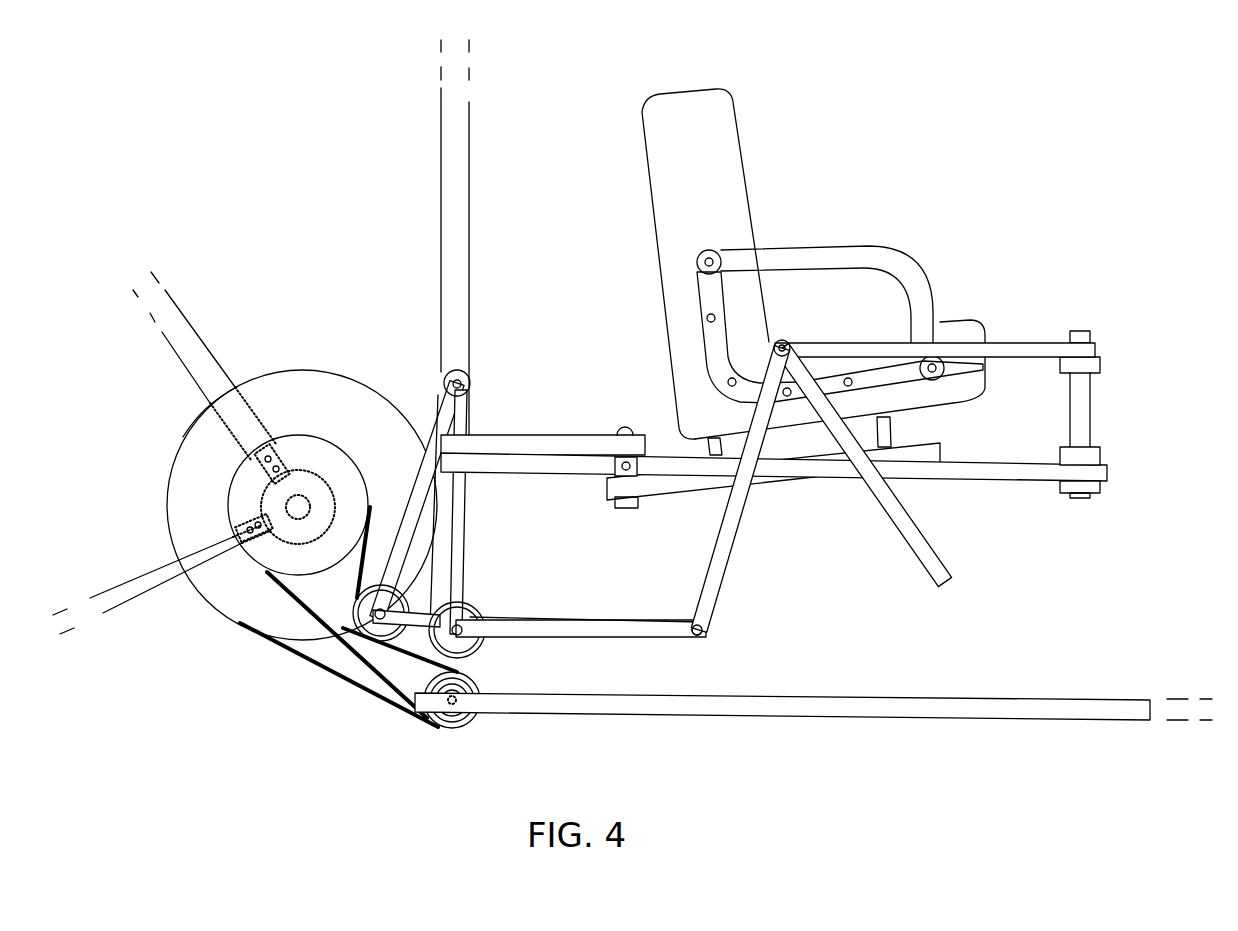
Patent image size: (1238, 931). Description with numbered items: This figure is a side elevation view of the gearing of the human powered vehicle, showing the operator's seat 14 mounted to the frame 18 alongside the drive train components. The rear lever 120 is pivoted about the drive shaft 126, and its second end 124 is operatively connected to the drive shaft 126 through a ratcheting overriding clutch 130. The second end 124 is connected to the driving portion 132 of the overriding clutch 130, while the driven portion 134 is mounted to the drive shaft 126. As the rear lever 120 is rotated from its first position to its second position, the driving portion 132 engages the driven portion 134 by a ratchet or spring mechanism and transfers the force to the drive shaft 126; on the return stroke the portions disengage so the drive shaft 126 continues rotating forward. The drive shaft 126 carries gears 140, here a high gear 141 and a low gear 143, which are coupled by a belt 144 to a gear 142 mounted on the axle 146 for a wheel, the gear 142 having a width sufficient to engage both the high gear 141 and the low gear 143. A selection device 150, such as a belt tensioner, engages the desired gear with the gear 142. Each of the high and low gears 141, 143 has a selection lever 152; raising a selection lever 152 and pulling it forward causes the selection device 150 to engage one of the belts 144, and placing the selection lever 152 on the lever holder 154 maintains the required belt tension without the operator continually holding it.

The seat 14 is at (700, 92).
The frame 18 is at (702, 708).
The rear lever 120 is at (177, 318).
The second end 124 is at (245, 420).
The drive shaft 126 is at (298, 510).
The overriding clutch 130 is at (328, 488).
The driving portion 132 is at (270, 453).
The driven portion 134 is at (298, 473).
The gears 140 is at (228, 498).
The high gear 141 is at (183, 437).
The gears 142 is at (455, 727).
The low gear 143 is at (232, 487).
The belt 144 is at (333, 655).
The axle 146 is at (455, 700).
The selection device 150 is at (472, 615).
The selection lever 152 is at (1020, 343).
The lever holder 154 is at (1080, 333).